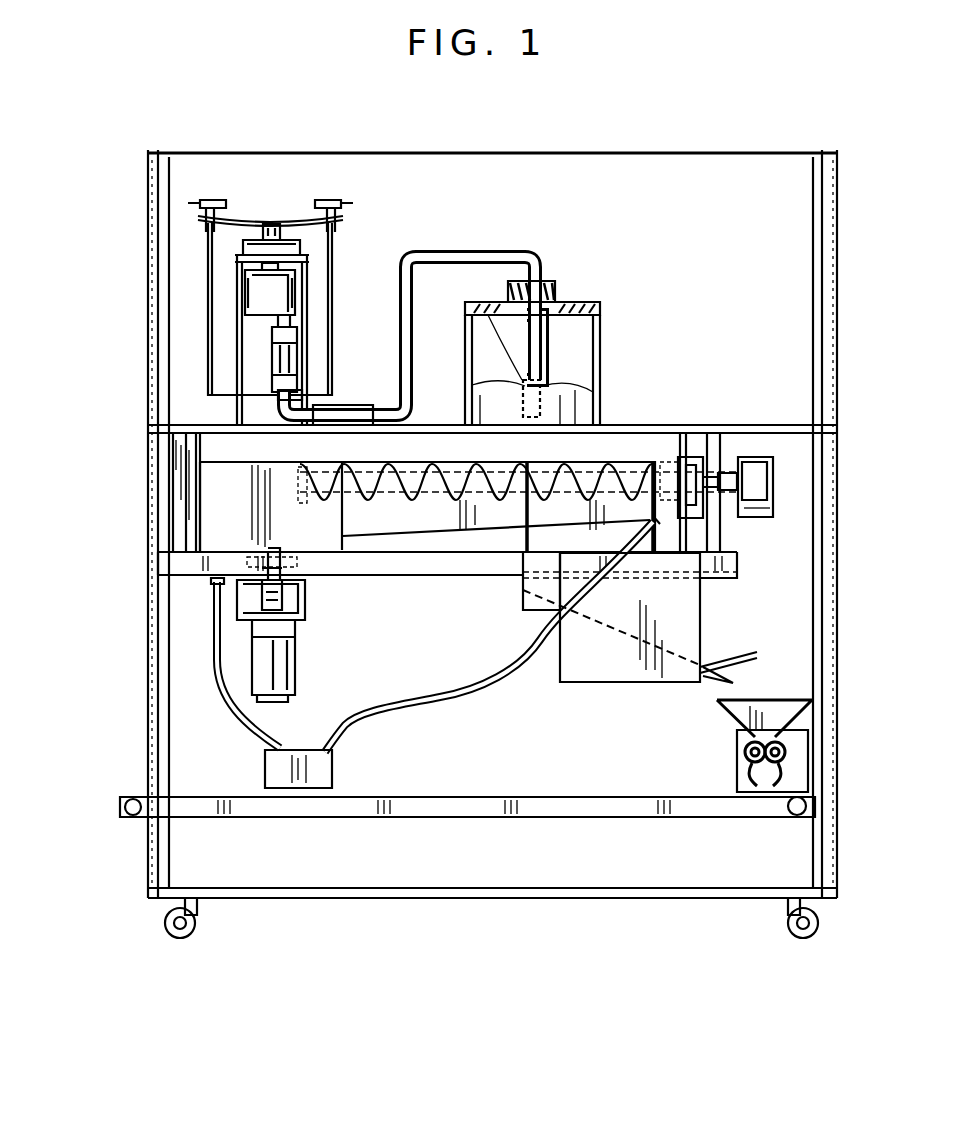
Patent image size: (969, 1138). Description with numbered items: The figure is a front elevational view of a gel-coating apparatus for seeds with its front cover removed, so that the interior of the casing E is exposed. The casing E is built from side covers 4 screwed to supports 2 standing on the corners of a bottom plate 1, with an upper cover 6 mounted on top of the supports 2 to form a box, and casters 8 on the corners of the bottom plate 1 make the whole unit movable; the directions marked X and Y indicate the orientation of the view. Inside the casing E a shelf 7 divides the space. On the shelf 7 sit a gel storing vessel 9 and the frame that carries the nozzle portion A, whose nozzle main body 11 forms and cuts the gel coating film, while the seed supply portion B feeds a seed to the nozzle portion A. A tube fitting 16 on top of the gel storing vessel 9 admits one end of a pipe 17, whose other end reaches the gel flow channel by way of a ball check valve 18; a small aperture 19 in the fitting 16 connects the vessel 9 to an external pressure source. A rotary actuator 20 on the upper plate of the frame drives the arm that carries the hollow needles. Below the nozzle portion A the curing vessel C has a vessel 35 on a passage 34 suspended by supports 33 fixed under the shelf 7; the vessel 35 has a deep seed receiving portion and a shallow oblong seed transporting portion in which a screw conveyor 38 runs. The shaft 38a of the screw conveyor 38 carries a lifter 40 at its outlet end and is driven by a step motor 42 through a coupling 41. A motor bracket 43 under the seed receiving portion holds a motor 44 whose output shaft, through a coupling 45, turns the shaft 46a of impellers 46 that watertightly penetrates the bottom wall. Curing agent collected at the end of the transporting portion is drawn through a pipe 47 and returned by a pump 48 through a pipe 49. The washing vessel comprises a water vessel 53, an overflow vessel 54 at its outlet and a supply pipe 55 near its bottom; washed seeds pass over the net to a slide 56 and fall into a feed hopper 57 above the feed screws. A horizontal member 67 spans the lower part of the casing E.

The bottom plate 1 is at (290, 898).
The supports 2 is at (163, 845).
The side covers 4 is at (148, 399).
The upper cover 6 is at (418, 150).
The shelf 7 is at (208, 433).
The casters 8 is at (166, 927).
The gel storing vessel 9 is at (597, 355).
The nozzle main body 11 is at (245, 293).
The tube fitting 16 is at (510, 273).
The pipe 17 is at (341, 413).
The ball check valve 18 is at (276, 358).
The small aperture 19 is at (557, 296).
The rotary actuator 20 is at (297, 244).
The supports 33 is at (188, 493).
The passage 34 is at (192, 582).
The vessel 35 is at (550, 609).
The screw conveyor 38 is at (440, 465).
The shaft 38a is at (690, 465).
The lifter 40 is at (668, 458).
The coupling 41 is at (730, 472).
The step motor 42 is at (750, 518).
The motor bracket 43 is at (308, 590).
The motor 44 is at (297, 654).
The coupling 45 is at (305, 607).
The impellers 46 is at (262, 548).
The shaft 46a is at (300, 567).
The pipe 47 is at (467, 697).
The pump 48 is at (332, 768).
The pipe 49 is at (238, 712).
The water vessel 53 is at (645, 682).
The overflow vessel 54 is at (537, 612).
The pipe 55 is at (745, 655).
The slide 56 is at (603, 640).
The feed hopper 57 is at (775, 703).
The bar 67 is at (410, 817).
The nozzle portion A is at (318, 293).
The seed supply portion B is at (266, 188).
The curing vessel C is at (188, 527).
The casing E is at (229, 150).
The direction X is at (176, 138).
The direction Y is at (806, 138).